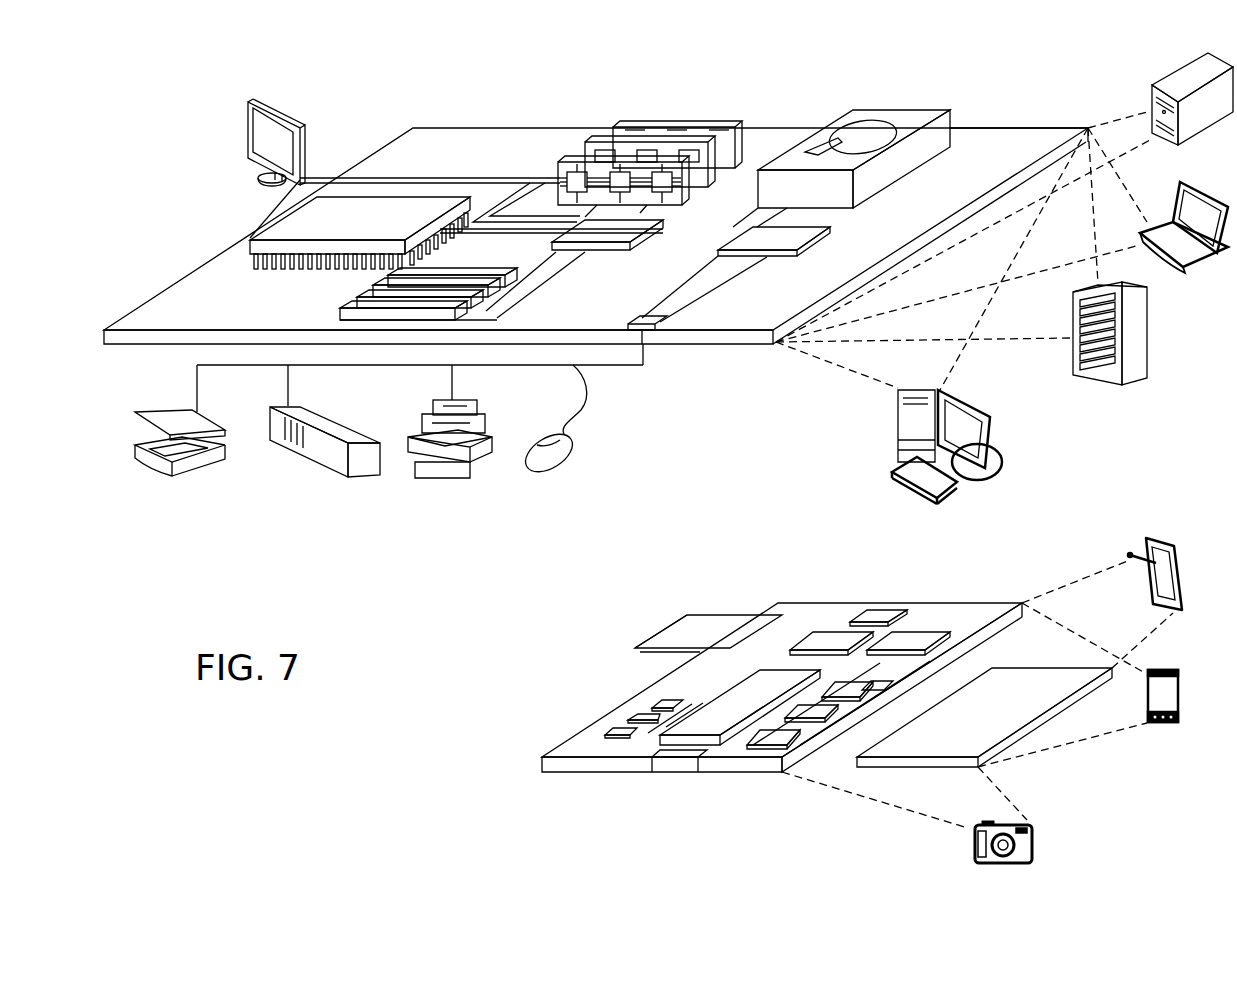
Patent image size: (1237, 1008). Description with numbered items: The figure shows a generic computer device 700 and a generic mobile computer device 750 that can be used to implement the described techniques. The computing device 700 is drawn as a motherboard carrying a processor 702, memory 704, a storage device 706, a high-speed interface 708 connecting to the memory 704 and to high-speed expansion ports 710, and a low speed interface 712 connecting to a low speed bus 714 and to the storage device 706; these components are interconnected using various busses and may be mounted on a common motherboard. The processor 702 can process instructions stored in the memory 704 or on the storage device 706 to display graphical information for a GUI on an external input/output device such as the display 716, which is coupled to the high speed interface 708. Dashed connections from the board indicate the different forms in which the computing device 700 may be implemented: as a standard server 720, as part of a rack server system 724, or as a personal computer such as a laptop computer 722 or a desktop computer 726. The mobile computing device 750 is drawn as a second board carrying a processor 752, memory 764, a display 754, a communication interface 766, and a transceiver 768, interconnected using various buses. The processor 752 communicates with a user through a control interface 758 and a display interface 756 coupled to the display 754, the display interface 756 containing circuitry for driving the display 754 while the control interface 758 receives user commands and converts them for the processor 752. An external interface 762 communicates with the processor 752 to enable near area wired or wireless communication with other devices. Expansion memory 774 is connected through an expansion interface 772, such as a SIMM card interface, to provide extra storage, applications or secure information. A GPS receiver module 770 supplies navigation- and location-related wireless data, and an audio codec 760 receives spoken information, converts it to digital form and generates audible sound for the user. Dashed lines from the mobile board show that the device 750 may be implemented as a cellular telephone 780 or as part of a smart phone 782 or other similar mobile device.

The computing device 700 is at (369, 79).
The processor 702 is at (272, 222).
The memory 704 is at (680, 122).
The storage device 706 is at (892, 108).
The high-speed interface 708 is at (619, 230).
The high-speed expansion ports 710 is at (363, 293).
The low speed interface 712 is at (750, 232).
The low speed bus 714 is at (647, 313).
The display 716 is at (252, 100).
The standard server 720 is at (1170, 78).
The laptop computer 722 is at (1197, 183).
The rack server system 724 is at (1146, 331).
The desktop computer 726 is at (1005, 467).
The mobile computer device 750 is at (496, 783).
The processor 752 is at (710, 712).
The display 754 is at (1020, 682).
The display interface 756 is at (787, 737).
The control interface 758 is at (820, 710).
The audio codec 760 is at (852, 683).
The external interface 762 is at (677, 763).
The memory 764 is at (630, 713).
The communication interface 766 is at (835, 630).
The transceiver 768 is at (915, 633).
The GPS receiver module 770 is at (880, 608).
The expansion interface 772 is at (762, 615).
The expansion memory 774 is at (687, 615).
The cellular telephone 780 is at (1152, 533).
The smart phone 782 is at (1157, 658).